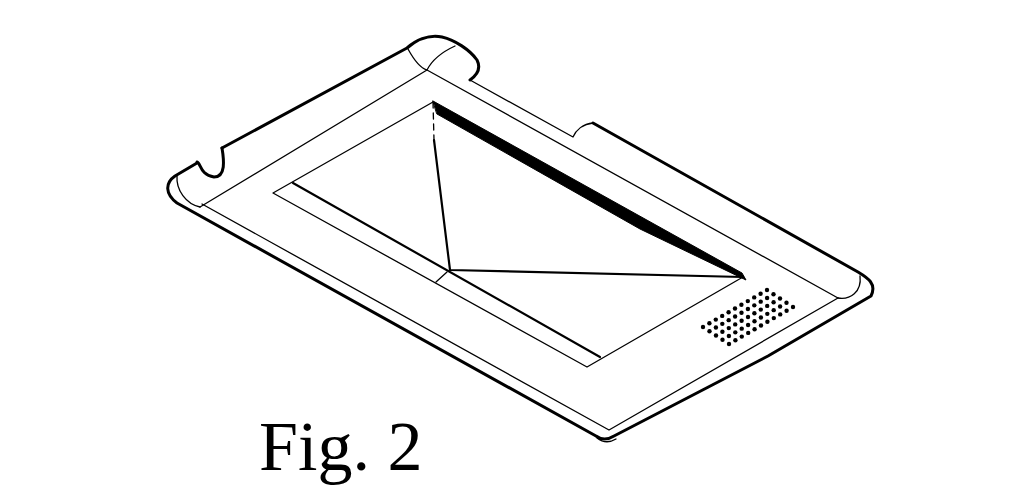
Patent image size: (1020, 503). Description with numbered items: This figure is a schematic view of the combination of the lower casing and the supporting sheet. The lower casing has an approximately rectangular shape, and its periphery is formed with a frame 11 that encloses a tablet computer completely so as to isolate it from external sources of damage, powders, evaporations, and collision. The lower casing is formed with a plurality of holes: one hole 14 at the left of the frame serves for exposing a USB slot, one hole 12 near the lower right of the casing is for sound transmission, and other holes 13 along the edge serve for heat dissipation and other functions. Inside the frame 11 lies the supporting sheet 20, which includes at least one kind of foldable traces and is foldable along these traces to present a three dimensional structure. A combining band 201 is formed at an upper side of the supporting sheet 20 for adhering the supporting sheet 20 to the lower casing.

The frame 11 is at (797, 245).
The hole for sound transmission 12 is at (777, 317).
The holes for heat dissipation 13 is at (557, 120).
The hole for exposing a USB slot 14 is at (210, 153).
The supporting sheet 20 is at (633, 320).
The combining band 201 is at (633, 212).